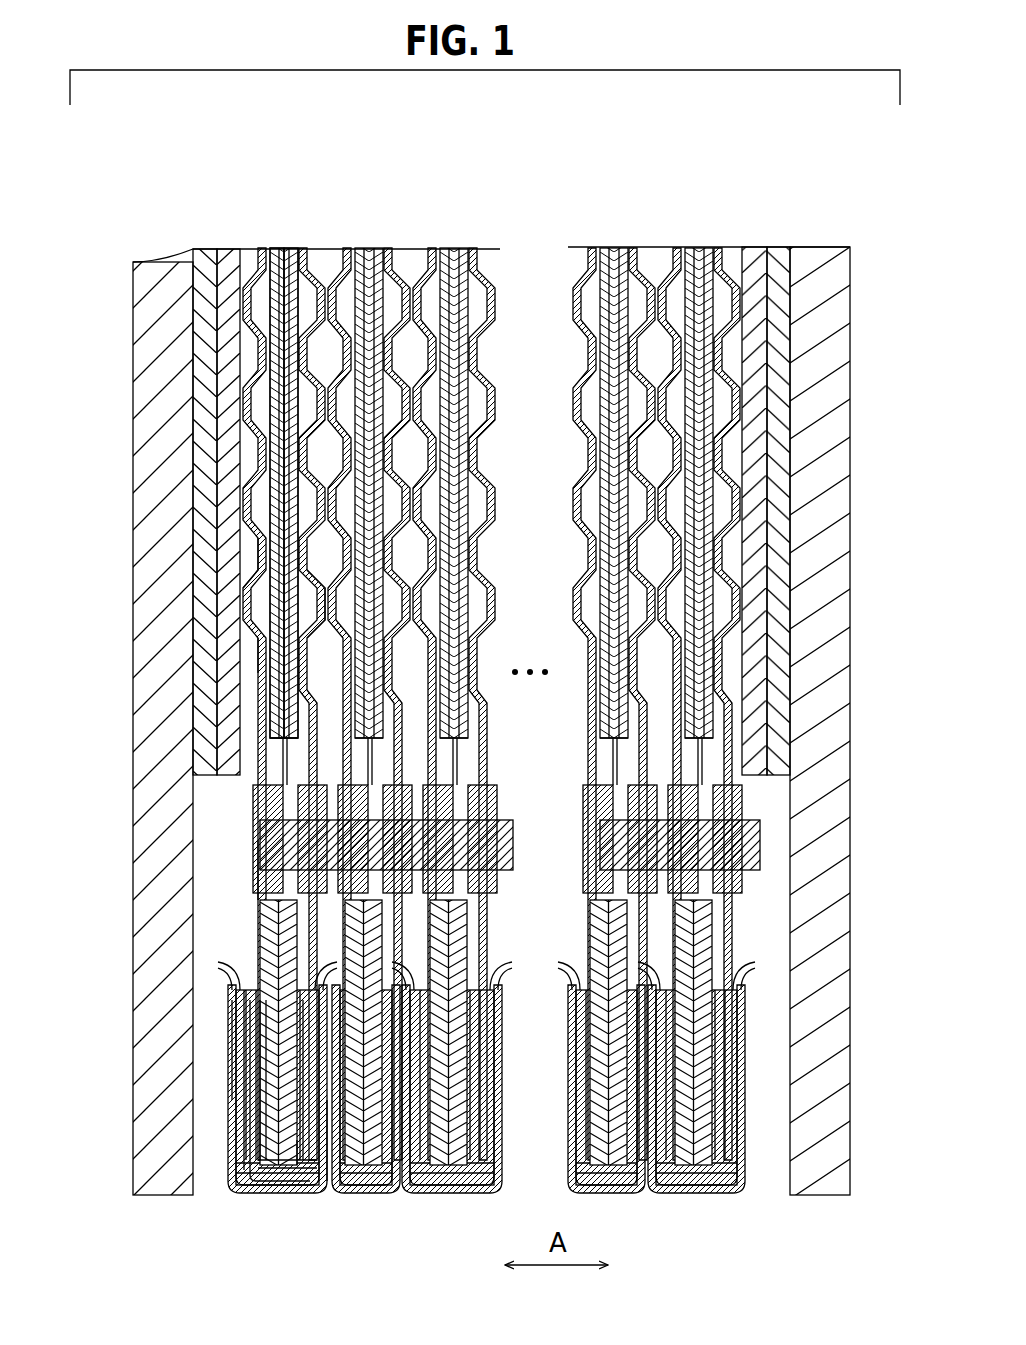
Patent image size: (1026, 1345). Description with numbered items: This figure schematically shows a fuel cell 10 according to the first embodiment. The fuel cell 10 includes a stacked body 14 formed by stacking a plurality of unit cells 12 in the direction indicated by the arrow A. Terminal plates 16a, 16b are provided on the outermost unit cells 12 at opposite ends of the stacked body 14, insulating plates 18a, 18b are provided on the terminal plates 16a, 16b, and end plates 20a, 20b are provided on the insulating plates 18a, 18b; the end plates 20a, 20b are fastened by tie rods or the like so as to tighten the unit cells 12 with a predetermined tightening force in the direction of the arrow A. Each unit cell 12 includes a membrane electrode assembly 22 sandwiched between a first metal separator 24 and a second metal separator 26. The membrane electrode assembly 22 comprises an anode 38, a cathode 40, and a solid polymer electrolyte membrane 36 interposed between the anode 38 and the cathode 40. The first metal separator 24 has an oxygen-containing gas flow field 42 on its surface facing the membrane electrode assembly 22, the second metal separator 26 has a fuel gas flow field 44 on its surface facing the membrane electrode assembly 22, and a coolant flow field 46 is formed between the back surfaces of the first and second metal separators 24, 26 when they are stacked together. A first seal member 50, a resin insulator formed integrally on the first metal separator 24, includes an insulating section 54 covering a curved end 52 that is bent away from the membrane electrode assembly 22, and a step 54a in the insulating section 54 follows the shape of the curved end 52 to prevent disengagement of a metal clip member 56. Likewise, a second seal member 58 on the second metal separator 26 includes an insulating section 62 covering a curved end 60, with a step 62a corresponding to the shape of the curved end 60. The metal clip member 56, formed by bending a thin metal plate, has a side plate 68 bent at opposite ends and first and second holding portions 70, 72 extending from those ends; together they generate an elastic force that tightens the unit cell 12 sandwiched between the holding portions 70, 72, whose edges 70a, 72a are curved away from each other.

The fuel cell 10 is at (757, 133).
The unit cell 12 is at (374, 240).
The stacked body 14 is at (755, 168).
The terminal plate 16a is at (750, 380).
The terminal plate 16b is at (232, 427).
The insulating plate 18a is at (778, 345).
The insulating plate 18b is at (205, 395).
The end plate 20a is at (815, 318).
The end plate 20b is at (175, 365).
The membrane electrode assembly 22 is at (281, 462).
The first metal separator 24 is at (328, 676).
The second metal separator 26 is at (235, 675).
The solid polymer electrolyte membrane 36 is at (282, 460).
The anode 38 is at (262, 472).
The cathode 40 is at (303, 472).
The oxygen-containing gas flow field 42 is at (164, 644).
The fuel gas flow field 44 is at (164, 537).
The coolant flow field 46 is at (52, 570).
The first seal member 50 is at (383, 799).
The curved end 52 is at (299, 1188).
The insulating section 54 is at (344, 1168).
The step 54a is at (189, 1080).
The metal clip member 56 is at (265, 1082).
The second seal member 58 is at (231, 880).
The curved end 60 is at (276, 1198).
The insulating section 62 is at (172, 1084).
The step 62a is at (175, 1080).
The side plate 68 is at (287, 1217).
The first holding portion 70 is at (196, 1090).
The edge 70a is at (161, 1050).
The second holding portion 72 is at (157, 1050).
The edge 72a is at (206, 976).